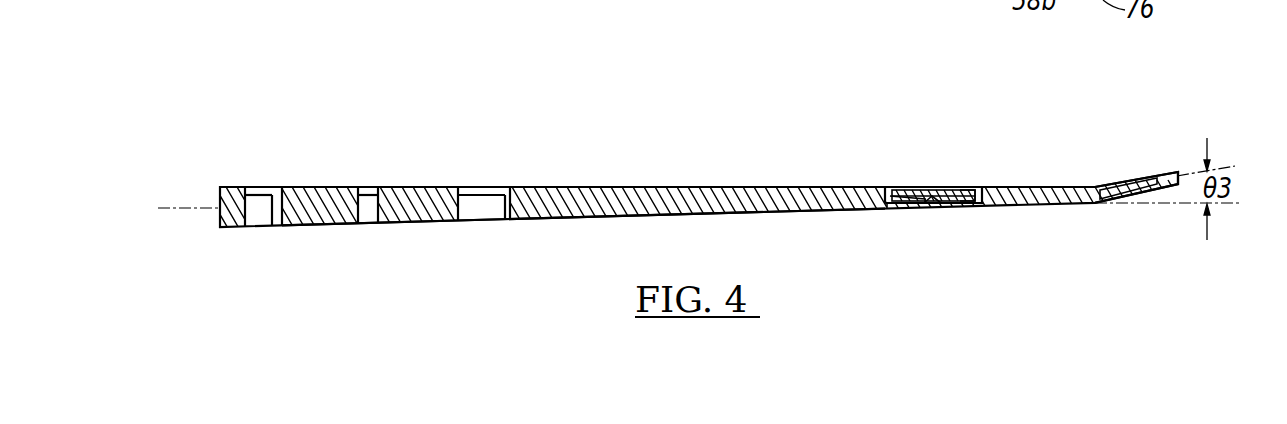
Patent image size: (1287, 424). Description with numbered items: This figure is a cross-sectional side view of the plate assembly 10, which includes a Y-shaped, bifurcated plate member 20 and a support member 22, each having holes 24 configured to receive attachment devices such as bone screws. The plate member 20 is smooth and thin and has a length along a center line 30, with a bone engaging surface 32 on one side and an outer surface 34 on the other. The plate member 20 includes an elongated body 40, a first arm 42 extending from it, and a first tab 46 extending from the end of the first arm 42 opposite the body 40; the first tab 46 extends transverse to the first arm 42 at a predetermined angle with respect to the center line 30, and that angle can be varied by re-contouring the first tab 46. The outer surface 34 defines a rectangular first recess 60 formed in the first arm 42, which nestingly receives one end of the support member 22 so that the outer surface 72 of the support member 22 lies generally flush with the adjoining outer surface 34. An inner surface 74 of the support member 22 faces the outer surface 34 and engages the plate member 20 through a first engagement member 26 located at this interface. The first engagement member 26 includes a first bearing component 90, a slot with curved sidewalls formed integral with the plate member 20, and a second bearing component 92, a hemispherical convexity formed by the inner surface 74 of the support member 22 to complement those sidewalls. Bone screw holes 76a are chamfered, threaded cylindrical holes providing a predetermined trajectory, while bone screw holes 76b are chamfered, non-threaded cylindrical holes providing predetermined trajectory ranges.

The plate assembly 10 is at (399, 62).
The plate member 20 is at (328, 187).
The support member 22 is at (952, 192).
The holes 24 is at (248, 206).
The first engagement member 26 is at (962, 220).
The center line 30 is at (192, 205).
The bone engaging surface 32 is at (540, 221).
The outer surface 34 is at (527, 187).
The elongated body 40 is at (600, 187).
The first arm 42 is at (785, 187).
The first tab 46 is at (1166, 173).
The first recess 60 is at (975, 191).
The outer surface of the support member 72 is at (940, 188).
The inner surface of the support member 74 is at (897, 208).
The bone screw holes 76a is at (1145, 178).
The bone screw holes 76b is at (377, 193).
The first bearing component 90 is at (918, 188).
The second bearing component 92 is at (931, 204).